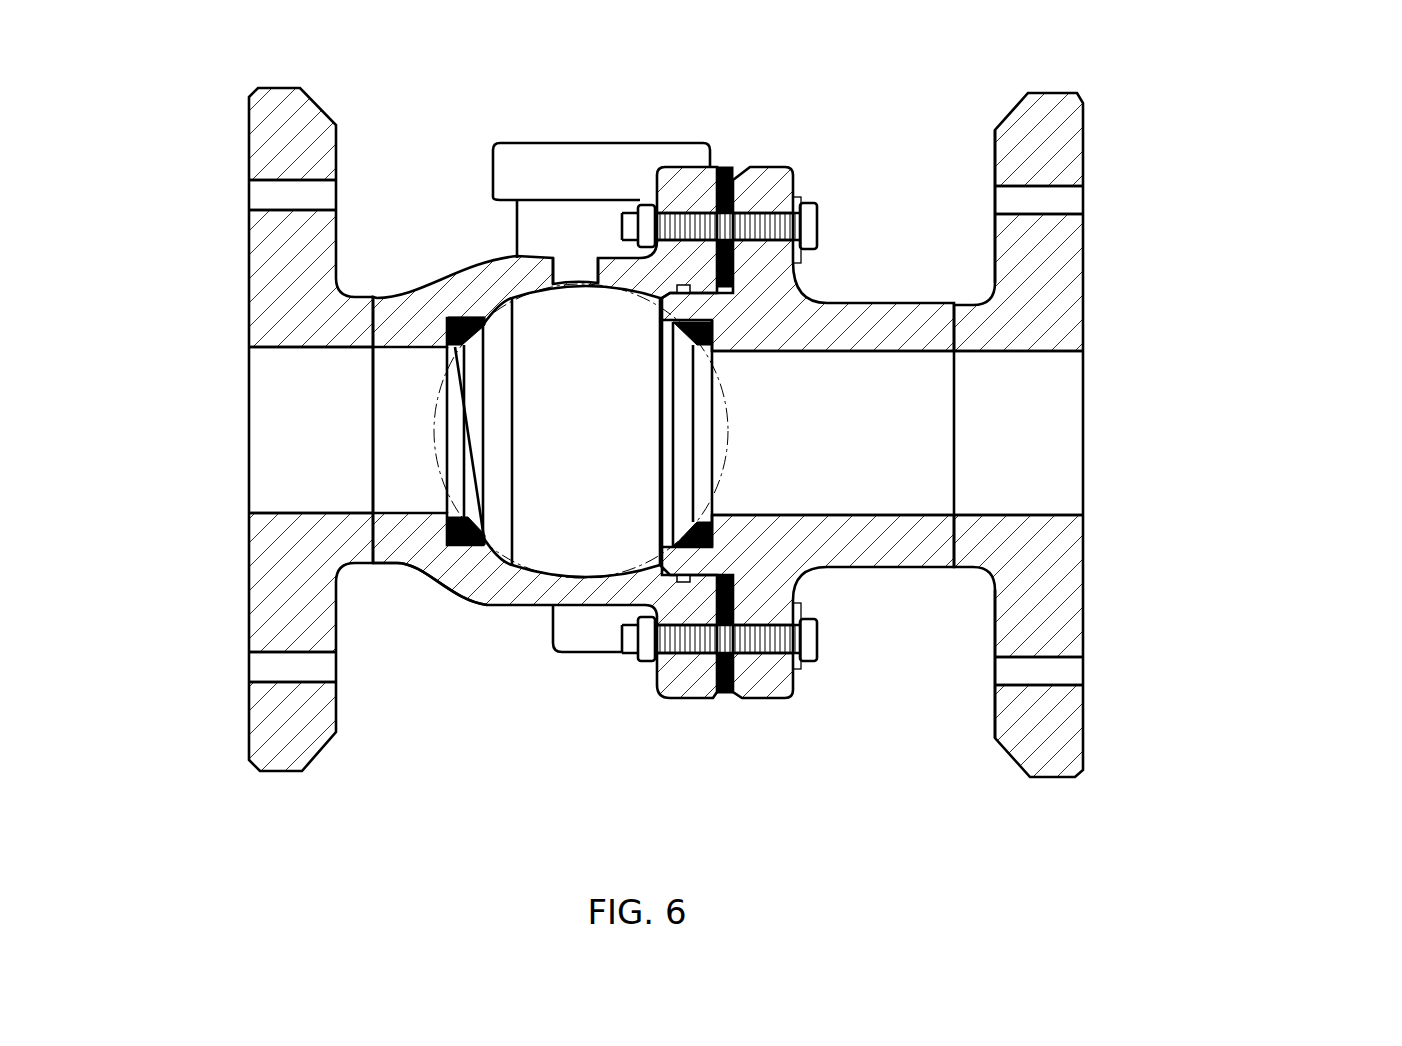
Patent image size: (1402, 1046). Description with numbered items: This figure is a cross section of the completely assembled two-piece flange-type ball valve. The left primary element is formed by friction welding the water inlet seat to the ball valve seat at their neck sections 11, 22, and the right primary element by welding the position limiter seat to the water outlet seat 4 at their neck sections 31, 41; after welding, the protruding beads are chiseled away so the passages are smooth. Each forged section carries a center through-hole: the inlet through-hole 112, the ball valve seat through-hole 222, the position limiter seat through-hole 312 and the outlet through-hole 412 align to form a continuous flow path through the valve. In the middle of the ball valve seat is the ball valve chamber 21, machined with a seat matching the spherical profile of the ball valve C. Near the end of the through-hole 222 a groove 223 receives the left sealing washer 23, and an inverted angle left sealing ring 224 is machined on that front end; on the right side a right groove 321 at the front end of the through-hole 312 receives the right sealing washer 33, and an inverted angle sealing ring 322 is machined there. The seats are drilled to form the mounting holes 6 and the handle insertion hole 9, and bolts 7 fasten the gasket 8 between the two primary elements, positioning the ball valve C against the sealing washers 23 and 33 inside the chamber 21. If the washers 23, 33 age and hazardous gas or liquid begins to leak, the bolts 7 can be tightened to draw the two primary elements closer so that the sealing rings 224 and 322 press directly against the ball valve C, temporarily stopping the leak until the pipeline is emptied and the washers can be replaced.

The neck section 11 is at (353, 293).
The center through-hole 112 is at (317, 438).
The ball valve chamber 21 is at (517, 253).
The neck section 22 is at (413, 572).
The center through-hole 222 is at (413, 423).
The groove 223 is at (447, 317).
The inverted angle left sealing ring 224 is at (452, 347).
The sealing washer 23 is at (458, 542).
The handle insertion hole 9 is at (580, 273).
The ball valve C is at (437, 438).
The neck section 31 is at (878, 303).
The center through-hole 312 is at (884, 440).
The right groove 321 is at (713, 330).
The inverted angle sealing ring 322 is at (710, 348).
The sealing washer 33 is at (695, 545).
The gasket 8 is at (727, 173).
The bolt 7 is at (757, 227).
The mounting hole 6 is at (255, 194).
The neck section 41 is at (973, 297).
The water outlet seat 4 is at (1073, 267).
The center through-hole 412 is at (1030, 445).